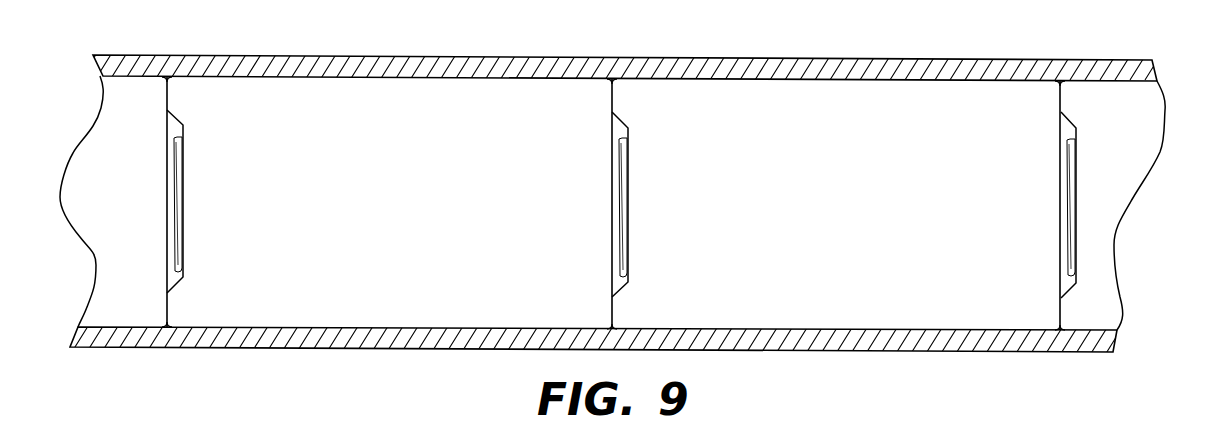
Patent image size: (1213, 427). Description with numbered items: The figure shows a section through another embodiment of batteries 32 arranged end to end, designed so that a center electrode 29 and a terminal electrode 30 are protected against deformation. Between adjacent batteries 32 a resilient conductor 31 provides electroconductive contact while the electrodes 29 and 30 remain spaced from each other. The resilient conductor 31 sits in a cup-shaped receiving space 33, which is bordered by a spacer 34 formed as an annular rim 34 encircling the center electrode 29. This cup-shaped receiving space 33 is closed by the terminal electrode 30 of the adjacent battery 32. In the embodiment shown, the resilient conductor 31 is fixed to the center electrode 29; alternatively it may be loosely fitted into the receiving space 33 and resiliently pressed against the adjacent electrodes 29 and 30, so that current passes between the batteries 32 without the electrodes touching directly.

The center electrode 29 is at (621, 199).
The terminal electrode 30 is at (623, 287).
The resilient conductor 31 is at (614, 268).
The battery 32 is at (408, 103).
The cup-shaped receiving space 33 is at (620, 138).
The spacer 34 is at (630, 316).